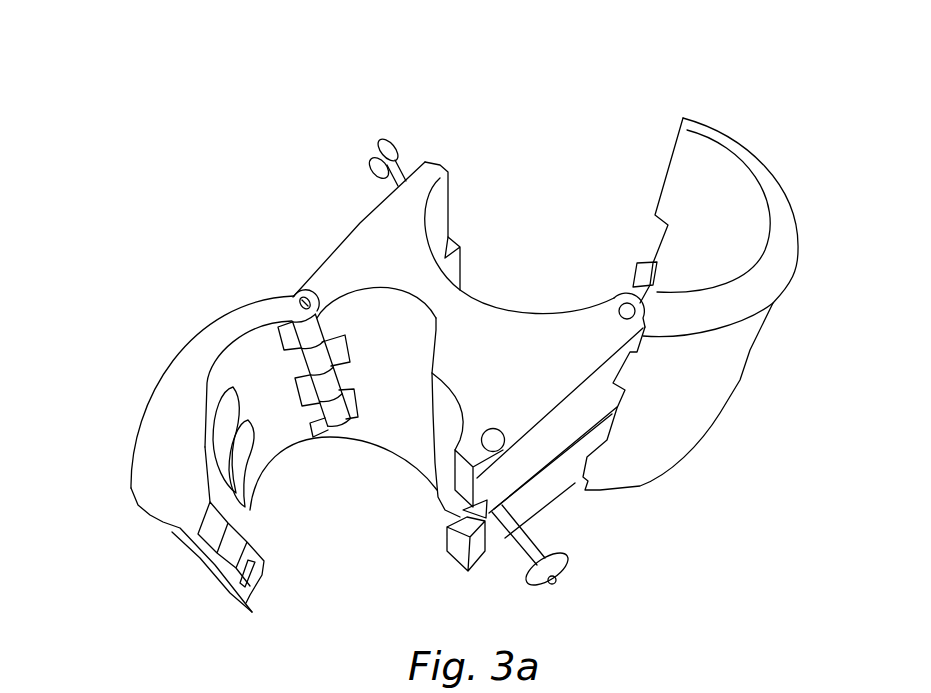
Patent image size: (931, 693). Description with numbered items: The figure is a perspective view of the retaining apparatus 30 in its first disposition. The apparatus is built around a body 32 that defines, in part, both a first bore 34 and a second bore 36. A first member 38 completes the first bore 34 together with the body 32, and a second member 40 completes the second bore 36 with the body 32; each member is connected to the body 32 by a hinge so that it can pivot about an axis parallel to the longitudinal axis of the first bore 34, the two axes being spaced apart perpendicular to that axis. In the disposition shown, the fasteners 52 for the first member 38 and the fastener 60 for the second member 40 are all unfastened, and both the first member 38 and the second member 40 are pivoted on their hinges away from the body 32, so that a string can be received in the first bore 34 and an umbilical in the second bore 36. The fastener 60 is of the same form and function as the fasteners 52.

The retaining apparatus 30 is at (579, 104).
The body 32 is at (540, 473).
The first bore 34 is at (601, 234).
The second bore 36 is at (348, 477).
The first member 38 is at (713, 363).
The second member 40 is at (167, 482).
The fasteners 52 is at (386, 147).
The fastener 60 is at (560, 574).